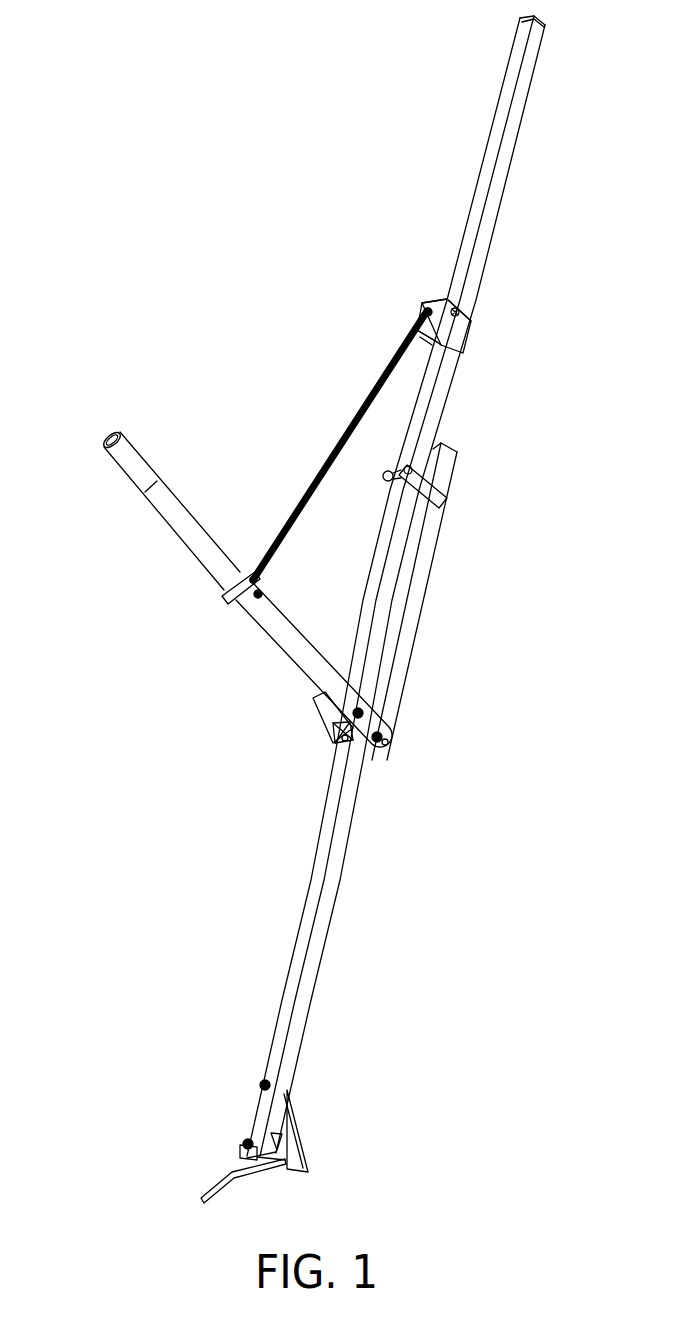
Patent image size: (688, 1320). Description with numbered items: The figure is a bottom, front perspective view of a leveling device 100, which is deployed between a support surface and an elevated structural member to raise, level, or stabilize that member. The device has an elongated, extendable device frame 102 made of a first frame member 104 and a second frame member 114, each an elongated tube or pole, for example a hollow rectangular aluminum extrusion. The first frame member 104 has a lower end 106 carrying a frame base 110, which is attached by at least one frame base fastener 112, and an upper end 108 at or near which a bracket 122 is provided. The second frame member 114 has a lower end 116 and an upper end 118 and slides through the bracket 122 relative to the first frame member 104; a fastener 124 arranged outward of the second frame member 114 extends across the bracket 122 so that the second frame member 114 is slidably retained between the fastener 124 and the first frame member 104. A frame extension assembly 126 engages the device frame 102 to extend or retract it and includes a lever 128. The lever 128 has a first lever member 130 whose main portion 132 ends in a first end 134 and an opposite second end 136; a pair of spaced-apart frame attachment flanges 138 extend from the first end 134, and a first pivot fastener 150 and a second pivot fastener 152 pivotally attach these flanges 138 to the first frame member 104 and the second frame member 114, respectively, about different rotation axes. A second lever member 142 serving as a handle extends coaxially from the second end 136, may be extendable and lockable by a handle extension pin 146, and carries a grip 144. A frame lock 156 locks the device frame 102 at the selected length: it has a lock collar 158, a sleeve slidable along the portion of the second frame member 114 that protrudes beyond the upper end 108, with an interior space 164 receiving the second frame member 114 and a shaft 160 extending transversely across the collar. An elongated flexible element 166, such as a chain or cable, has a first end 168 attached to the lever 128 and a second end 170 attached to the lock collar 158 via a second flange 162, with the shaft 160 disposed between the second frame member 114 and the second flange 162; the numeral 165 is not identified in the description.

The leveling device 100 is at (143, 95).
The device frame 102 is at (415, 587).
The first frame member 104 is at (326, 956).
The lower end 106 is at (252, 1166).
The upper end 108 is at (455, 448).
The frame base 110 is at (306, 1141).
The frame base fastener 112 is at (261, 1083).
The second frame member 114 is at (516, 143).
The lower end 116 is at (340, 733).
The upper end 118 is at (548, 22).
The bracket 122 is at (446, 504).
The fastener 124 is at (387, 482).
The frame extension assembly 126 is at (249, 589).
The lever 128 is at (151, 537).
The first lever member 130 is at (332, 690).
The main portion 132 is at (288, 621).
The first end 134 is at (315, 706).
The second end 136 is at (222, 591).
The frame attachment flanges 138 is at (350, 742).
The second lever member 142 is at (190, 549).
The grip 144 is at (131, 456).
The handle extension pin 146 is at (255, 600).
The first pivot fastener 150 is at (383, 735).
The second pivot fastener 152 is at (364, 712).
The frame lock 156 is at (316, 447).
The lock collar 158 is at (469, 336).
The shaft 160 is at (461, 311).
The second flange 162 is at (430, 300).
The interior space 164 is at (422, 350).
The flange slot 165 is at (427, 346).
The elongated flexible element 166 is at (340, 442).
The first end 168 is at (253, 575).
The second end 170 is at (424, 310).